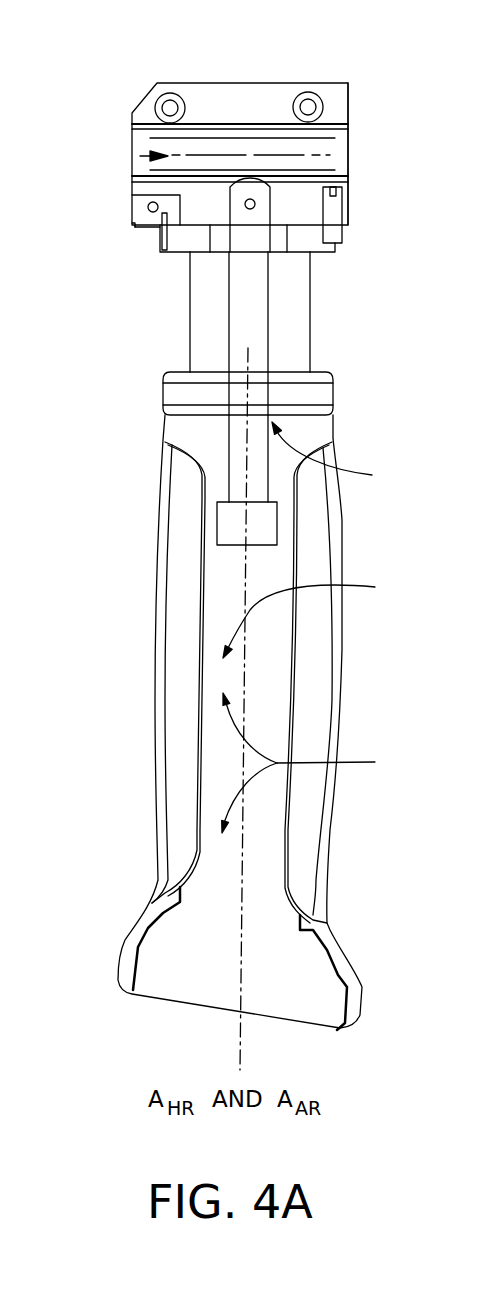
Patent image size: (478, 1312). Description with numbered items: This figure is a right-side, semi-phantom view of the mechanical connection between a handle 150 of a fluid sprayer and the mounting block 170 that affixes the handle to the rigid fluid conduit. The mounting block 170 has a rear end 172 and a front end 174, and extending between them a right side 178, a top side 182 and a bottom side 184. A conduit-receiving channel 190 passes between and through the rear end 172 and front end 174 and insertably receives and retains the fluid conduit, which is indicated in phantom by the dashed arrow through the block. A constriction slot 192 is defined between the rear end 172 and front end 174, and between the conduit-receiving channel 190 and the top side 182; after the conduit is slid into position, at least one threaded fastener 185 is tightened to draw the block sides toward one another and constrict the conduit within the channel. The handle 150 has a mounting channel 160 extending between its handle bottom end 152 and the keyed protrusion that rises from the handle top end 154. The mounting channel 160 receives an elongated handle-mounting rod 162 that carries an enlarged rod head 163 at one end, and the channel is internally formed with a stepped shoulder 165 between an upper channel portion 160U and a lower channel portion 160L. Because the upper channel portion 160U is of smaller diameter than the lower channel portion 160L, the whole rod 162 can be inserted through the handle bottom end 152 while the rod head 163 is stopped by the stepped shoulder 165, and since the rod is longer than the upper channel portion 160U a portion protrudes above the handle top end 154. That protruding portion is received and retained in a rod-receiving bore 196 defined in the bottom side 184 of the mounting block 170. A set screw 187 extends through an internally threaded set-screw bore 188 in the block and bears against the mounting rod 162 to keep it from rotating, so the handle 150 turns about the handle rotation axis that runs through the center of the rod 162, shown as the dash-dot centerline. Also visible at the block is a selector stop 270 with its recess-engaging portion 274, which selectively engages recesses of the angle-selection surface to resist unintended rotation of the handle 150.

The handle 150 is at (177, 694).
The handle bottom end 152 is at (283, 1022).
The handle top end 154 is at (285, 253).
The mounting channel 160 is at (324, 763).
The upper channel portion 160U is at (340, 475).
The lower channel portion 160L is at (331, 617).
The handle-mounting rod 162 is at (243, 334).
The rod head 163 is at (240, 525).
The stepped shoulder 165 is at (285, 507).
The mounting block 170 is at (245, 125).
The rear end 172 is at (130, 123).
The front end 174 is at (350, 168).
The right side 178 is at (228, 143).
The top side 182 is at (257, 82).
The bottom side 184 is at (137, 227).
The threaded fastener 185 is at (308, 107).
The set screw 187 is at (247, 206).
The set-screw bore 188 is at (250, 210).
The conduit-receiving channel 190 is at (140, 158).
The constriction slot 192 is at (352, 103).
The rod-receiving bore 196 is at (270, 197).
The selector stop 270 is at (137, 205).
The recess-engaging portion 274 is at (160, 237).